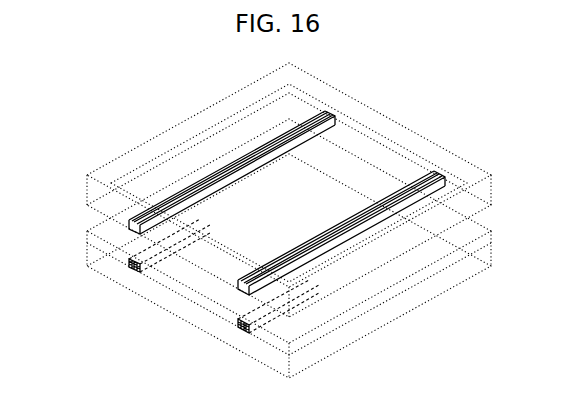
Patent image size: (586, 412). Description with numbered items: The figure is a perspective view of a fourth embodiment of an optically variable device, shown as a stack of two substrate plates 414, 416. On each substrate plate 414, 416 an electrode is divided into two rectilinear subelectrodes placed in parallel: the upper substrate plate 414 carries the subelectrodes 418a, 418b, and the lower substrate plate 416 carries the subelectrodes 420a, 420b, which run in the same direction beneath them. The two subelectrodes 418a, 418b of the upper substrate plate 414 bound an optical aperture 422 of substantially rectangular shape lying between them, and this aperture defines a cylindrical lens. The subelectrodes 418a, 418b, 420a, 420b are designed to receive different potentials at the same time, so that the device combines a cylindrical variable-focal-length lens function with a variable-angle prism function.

The substrate plate 414 is at (185, 126).
The substrate plate 416 is at (357, 333).
The subelectrode 418a is at (440, 174).
The subelectrode 418b is at (335, 112).
The subelectrode 420a is at (243, 328).
The subelectrode 420b is at (133, 264).
The optical aperture 422 is at (272, 208).